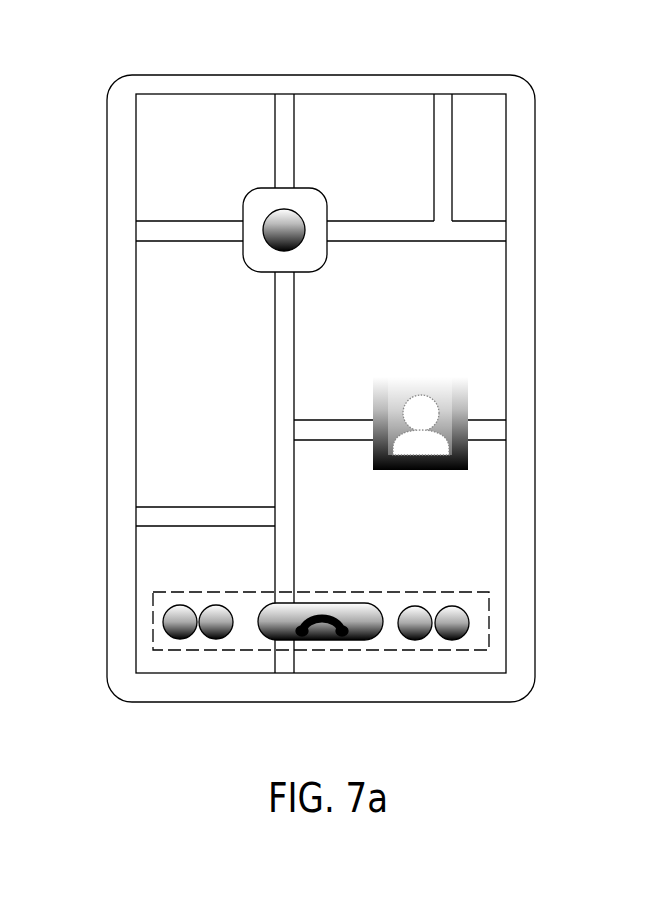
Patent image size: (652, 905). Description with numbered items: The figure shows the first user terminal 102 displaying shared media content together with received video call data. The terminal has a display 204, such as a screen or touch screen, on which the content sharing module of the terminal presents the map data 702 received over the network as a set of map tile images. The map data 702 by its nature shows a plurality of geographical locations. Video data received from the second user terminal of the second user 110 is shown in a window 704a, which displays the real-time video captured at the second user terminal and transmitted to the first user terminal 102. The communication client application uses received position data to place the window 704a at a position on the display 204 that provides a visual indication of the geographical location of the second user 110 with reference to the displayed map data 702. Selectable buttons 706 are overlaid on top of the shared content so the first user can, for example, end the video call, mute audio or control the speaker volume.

The first user terminal 102 is at (535, 115).
The display 204 is at (506, 272).
The map data 702 is at (152, 137).
The window 704a is at (479, 406).
The second user 110 is at (417, 395).
The selectable buttons 706 is at (489, 613).